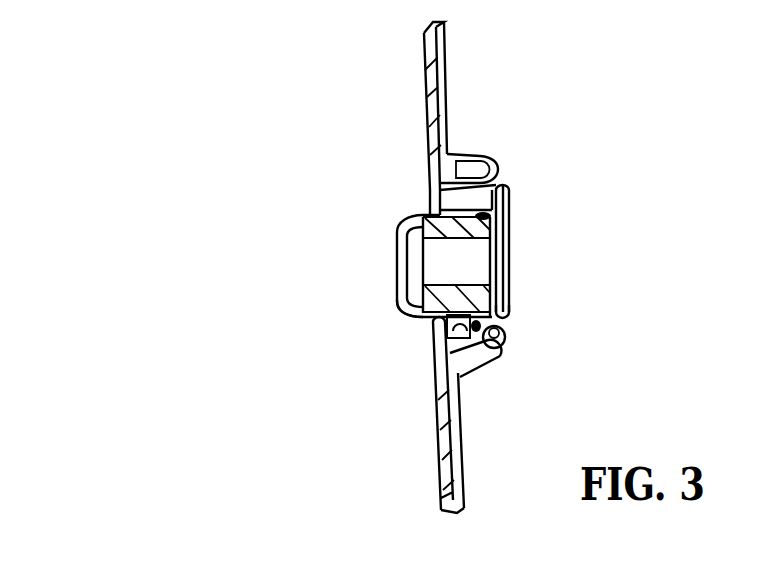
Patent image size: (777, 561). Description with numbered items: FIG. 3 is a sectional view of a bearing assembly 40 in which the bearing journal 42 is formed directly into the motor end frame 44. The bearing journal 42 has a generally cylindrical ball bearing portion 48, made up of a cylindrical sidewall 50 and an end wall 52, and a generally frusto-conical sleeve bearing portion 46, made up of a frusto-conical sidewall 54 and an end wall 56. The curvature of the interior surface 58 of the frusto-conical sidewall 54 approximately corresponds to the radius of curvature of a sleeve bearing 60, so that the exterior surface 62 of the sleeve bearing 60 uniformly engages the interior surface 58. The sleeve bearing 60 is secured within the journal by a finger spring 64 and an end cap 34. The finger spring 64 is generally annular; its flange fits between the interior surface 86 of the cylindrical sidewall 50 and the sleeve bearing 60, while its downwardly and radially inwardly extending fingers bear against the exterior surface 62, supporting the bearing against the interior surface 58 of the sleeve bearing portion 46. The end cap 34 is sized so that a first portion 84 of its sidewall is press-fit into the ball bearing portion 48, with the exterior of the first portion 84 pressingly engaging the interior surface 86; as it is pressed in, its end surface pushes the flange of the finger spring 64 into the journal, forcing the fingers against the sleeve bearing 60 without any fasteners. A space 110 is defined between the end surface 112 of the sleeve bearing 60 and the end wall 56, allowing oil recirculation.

The end cap 34 is at (506, 324).
The bearing assembly 40 is at (336, 217).
The bearing journal 42 is at (409, 198).
The motor end frame 44 is at (423, 43).
The sleeve bearing portion 46 is at (397, 316).
The ball bearing portion 48 is at (436, 338).
The cylindrical sidewall 50 is at (460, 160).
The end wall 52 is at (497, 185).
The frusto-conical sidewall 54 is at (440, 352).
The end wall 56 is at (400, 290).
The interior surface 58 is at (400, 232).
The sleeve bearing 60 is at (500, 210).
The exterior surface 62 is at (500, 200).
The finger spring 64 is at (507, 322).
The first portion 84 is at (509, 330).
The interior surface 86 is at (496, 352).
The space 110 is at (418, 268).
The end surface 112 is at (397, 243).